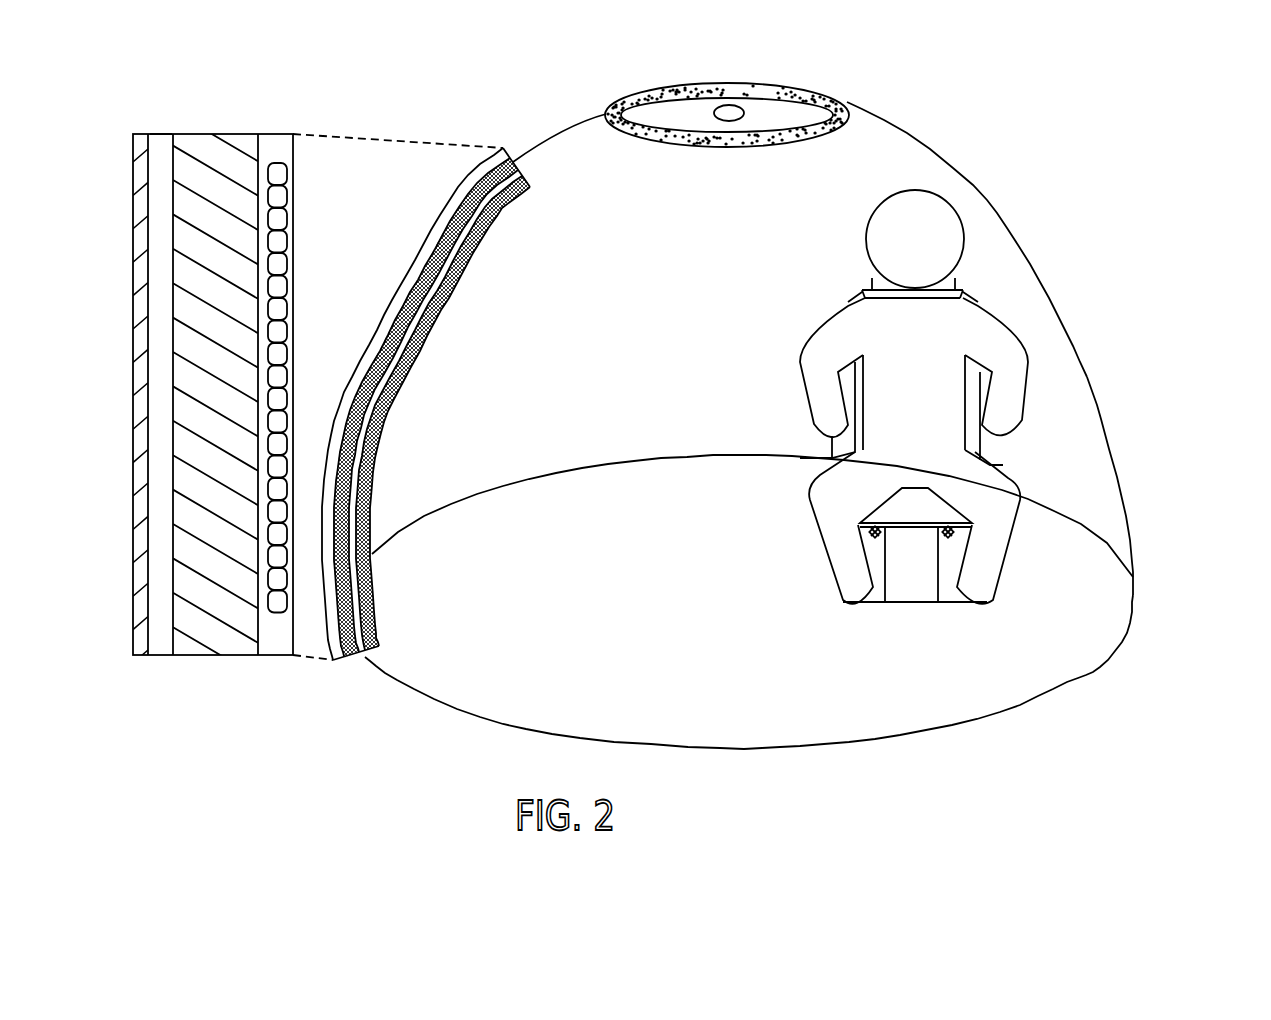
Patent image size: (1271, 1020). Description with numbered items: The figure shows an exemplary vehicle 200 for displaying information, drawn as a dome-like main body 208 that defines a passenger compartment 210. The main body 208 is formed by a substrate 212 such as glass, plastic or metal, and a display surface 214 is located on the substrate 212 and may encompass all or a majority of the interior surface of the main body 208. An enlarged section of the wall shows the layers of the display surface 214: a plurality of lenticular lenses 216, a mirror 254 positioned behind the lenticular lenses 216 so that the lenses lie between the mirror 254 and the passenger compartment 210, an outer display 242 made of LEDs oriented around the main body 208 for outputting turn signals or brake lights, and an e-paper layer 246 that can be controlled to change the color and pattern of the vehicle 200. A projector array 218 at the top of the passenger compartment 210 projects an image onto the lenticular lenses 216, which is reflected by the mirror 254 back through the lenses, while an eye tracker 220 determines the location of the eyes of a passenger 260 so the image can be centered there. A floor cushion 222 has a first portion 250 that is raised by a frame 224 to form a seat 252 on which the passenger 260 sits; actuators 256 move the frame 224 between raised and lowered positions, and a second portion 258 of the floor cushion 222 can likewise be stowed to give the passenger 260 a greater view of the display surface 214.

The vehicle 200 is at (1070, 222).
The main body 208 is at (1088, 378).
The passenger compartment 210 is at (556, 300).
The substrate 212 is at (1118, 476).
The display surface 214 is at (418, 386).
The lenticular lenses 216 is at (291, 690).
The projector array 218 is at (625, 107).
The eye tracker 220 is at (728, 104).
The floor cushion 222 is at (618, 620).
The frame 224 is at (942, 590).
The outer display 242 is at (138, 609).
The e-paper layer 246 is at (160, 690).
The first portion 250 is at (1018, 470).
The seat 252 is at (997, 460).
The mirror 254 is at (214, 642).
The actuators 256 is at (950, 533).
The second portion 258 is at (500, 520).
The passenger 260 is at (878, 238).